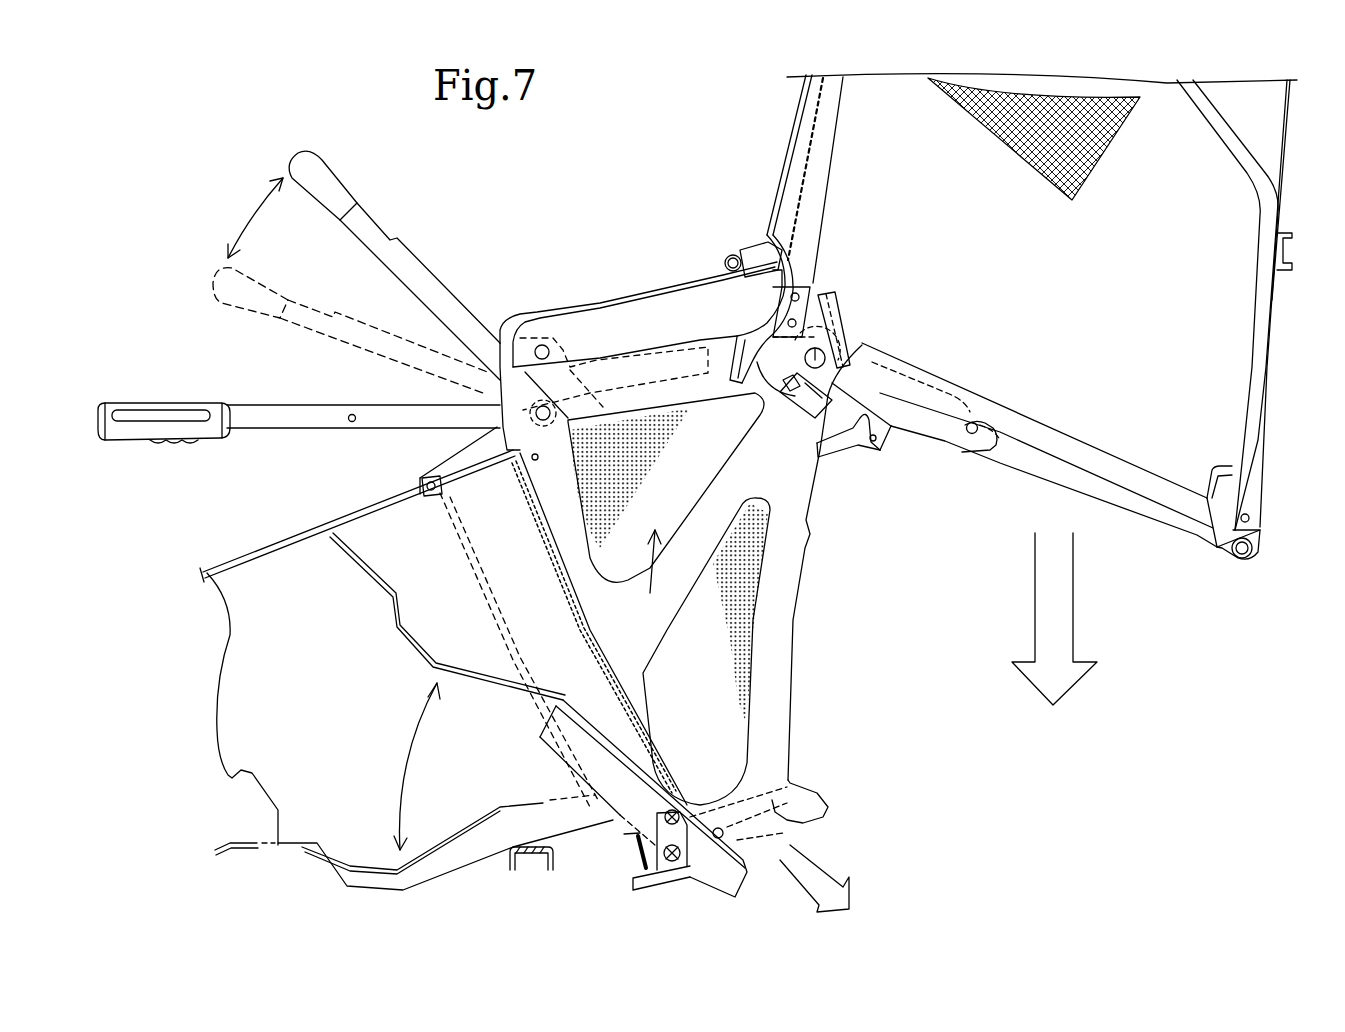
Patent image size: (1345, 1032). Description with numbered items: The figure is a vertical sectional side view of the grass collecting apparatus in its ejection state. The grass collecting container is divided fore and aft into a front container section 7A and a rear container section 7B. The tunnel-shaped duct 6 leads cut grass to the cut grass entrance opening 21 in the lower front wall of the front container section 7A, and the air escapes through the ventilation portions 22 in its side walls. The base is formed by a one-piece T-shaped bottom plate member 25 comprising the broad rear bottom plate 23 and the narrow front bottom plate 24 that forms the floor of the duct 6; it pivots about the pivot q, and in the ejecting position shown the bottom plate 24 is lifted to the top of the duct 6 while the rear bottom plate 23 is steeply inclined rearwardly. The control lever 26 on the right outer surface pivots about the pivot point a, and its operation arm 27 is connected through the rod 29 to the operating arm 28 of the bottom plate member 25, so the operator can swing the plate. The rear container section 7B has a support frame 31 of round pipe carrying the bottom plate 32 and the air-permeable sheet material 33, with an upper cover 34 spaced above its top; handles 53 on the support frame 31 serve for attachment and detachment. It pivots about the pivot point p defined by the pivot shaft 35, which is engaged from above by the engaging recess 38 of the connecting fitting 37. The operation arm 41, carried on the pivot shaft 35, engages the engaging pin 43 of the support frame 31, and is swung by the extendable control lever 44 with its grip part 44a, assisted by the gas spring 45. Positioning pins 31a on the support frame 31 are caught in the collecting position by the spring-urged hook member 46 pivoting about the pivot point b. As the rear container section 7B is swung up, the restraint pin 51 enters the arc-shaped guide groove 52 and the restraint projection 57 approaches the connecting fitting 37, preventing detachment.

The duct 6 is at (413, 497).
The front container section 7A is at (603, 297).
The rear container section 7B is at (790, 123).
The cut grass entrance opening 21 is at (580, 597).
The ventilation portions 22 is at (713, 607).
The rear bottom plate 23 is at (687, 813).
The bottom plate 24 is at (383, 587).
The bottom plate member 25 is at (400, 640).
The control lever 26 is at (338, 200).
The operation arm 27 is at (470, 455).
The operating arm 28 is at (600, 820).
The rod 29 is at (513, 657).
The support frame 31 is at (1097, 472).
The positioning pins 31a is at (1248, 560).
The bottom plate 32 is at (1288, 117).
The sheet material 33 is at (1203, 317).
The upper cover 34 is at (777, 183).
The pivot shaft 35 is at (822, 355).
The connecting fittings 37 is at (813, 290).
The engaging recess 38 is at (880, 393).
The operation arm 41 is at (945, 442).
The engaging pin 43 is at (976, 426).
The control lever 44 is at (270, 422).
The grip part 44a is at (167, 403).
The gas spring 45 is at (833, 457).
The hook member 46 is at (813, 800).
The restraint pin 51 is at (800, 372).
The guide groove 52 is at (798, 380).
The handles 53 is at (738, 253).
The restraint projection 57 is at (745, 333).
The pivot point a is at (560, 414).
The pivot point b is at (753, 833).
The pivot point p is at (833, 305).
The pivot q is at (672, 808).